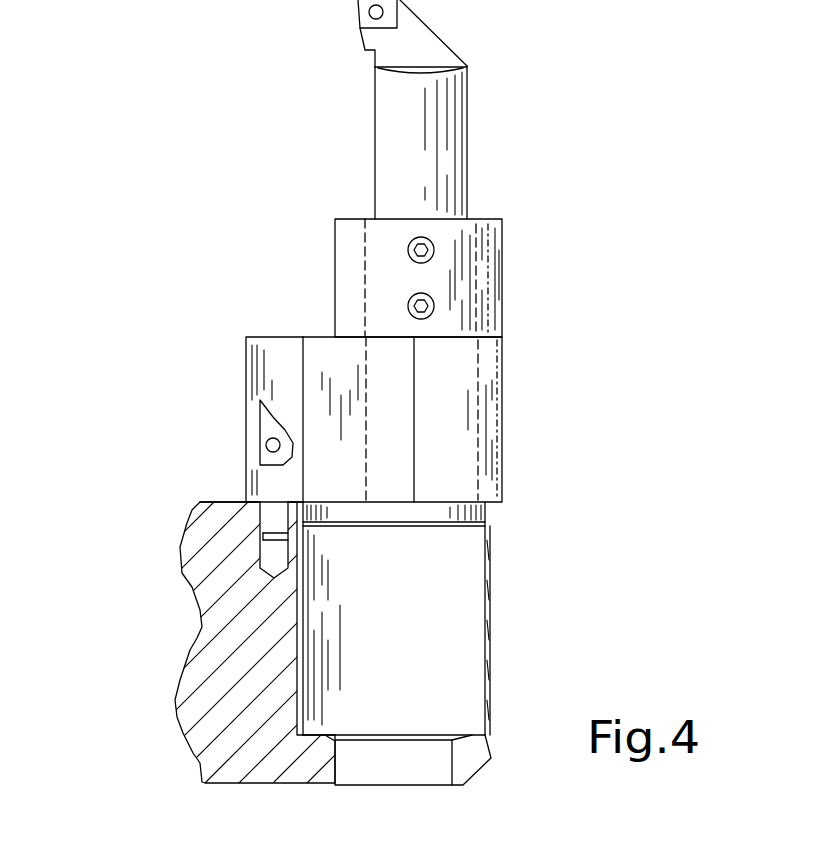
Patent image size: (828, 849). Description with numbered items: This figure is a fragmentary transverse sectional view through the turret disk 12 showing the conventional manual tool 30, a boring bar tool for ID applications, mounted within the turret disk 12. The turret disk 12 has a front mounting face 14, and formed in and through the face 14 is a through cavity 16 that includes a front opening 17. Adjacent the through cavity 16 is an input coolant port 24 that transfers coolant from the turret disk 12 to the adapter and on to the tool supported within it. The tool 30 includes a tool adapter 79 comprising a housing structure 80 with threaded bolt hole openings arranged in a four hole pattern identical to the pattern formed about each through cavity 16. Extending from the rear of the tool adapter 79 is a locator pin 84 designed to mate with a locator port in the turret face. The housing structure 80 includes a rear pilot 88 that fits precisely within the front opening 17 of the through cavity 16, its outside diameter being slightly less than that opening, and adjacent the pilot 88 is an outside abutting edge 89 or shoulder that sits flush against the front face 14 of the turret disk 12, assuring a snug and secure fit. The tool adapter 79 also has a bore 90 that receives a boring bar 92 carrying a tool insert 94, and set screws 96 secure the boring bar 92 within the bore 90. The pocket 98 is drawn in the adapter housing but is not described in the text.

The turret disk 12 is at (242, 698).
The front mounting face 14 is at (208, 500).
The through cavity 16 is at (443, 675).
The front opening 17 is at (188, 5).
The input coolant port 24 is at (260, 556).
The conventional manual tool 30 is at (636, 577).
The tool adapter 79 is at (532, 355).
The housing structure 80 is at (456, 438).
The locator pin 84 is at (260, 515).
The rear pilot 88 is at (487, 527).
The outside abutting edge 89 is at (487, 507).
The bore 90 is at (365, 325).
The boring bar 92 is at (395, 130).
The tool insert 94 is at (360, 15).
The set screws 96 is at (434, 301).
The pocket 98 is at (258, 443).